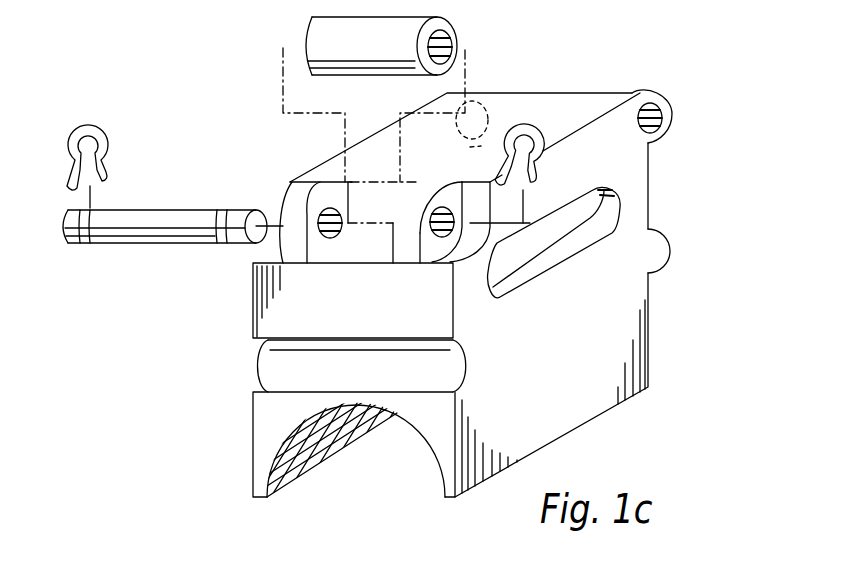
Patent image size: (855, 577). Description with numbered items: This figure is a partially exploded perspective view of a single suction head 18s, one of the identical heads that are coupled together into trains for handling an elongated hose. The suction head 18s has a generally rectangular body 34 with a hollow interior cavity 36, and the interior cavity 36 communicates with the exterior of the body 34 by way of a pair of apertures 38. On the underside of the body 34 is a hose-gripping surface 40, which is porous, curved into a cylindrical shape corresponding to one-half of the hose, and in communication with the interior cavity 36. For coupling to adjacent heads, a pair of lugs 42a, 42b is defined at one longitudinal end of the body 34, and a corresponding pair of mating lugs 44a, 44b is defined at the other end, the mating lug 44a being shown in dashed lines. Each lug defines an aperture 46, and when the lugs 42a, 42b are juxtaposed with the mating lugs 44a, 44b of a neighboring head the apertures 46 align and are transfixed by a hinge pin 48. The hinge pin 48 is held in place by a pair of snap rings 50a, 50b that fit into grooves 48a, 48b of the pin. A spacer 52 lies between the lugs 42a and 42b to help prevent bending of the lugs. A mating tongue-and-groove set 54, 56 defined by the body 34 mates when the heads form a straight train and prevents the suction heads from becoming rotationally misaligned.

The suction head 18s is at (743, 363).
The body 34 is at (252, 434).
The interior cavity 36 is at (554, 251).
The aperture 38 is at (608, 210).
The hose-gripping surface 40 is at (330, 456).
The lug 42a is at (284, 204).
The lug 42b is at (442, 180).
The mating lug 44a is at (520, 96).
The mating lug 44b is at (668, 97).
The aperture 46 is at (338, 208).
The hinge pin 48 is at (147, 244).
The groove 48a is at (84, 244).
The groove 48b is at (222, 244).
The snap ring 50a is at (110, 143).
The snap ring 50b is at (548, 163).
The spacer 52 is at (458, 32).
The tongue 54 is at (256, 364).
The groove 56 is at (669, 250).